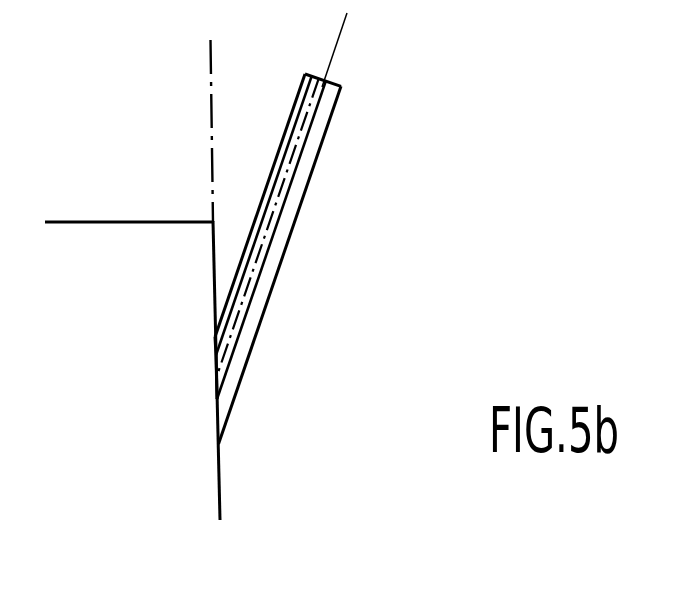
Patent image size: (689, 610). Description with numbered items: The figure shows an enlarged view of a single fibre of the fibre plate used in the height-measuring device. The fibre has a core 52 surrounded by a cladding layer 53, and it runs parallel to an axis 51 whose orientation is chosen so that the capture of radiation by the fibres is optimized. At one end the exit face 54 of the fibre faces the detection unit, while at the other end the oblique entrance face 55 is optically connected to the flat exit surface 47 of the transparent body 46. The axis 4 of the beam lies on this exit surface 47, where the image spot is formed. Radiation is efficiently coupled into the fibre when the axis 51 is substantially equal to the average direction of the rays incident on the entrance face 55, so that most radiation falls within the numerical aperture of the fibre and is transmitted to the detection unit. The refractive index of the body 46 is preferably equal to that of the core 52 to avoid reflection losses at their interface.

The axis 4 is at (211, 117).
The transparent body 46 is at (116, 276).
The exit surface 47 is at (218, 483).
The axis of the fibres 51 is at (344, 25).
The core 52 is at (311, 131).
The cladding layer 53 is at (336, 110).
The exit face 54 is at (326, 78).
The oblique entrance face 55 is at (214, 398).